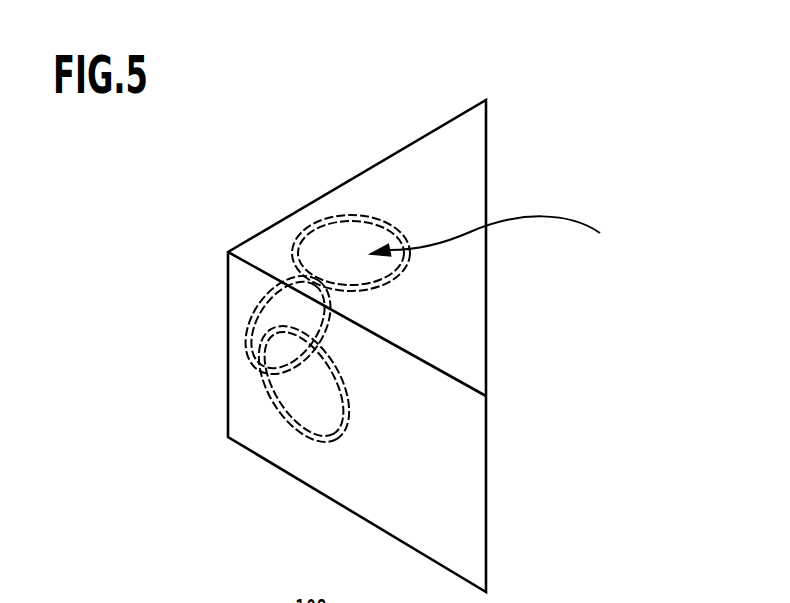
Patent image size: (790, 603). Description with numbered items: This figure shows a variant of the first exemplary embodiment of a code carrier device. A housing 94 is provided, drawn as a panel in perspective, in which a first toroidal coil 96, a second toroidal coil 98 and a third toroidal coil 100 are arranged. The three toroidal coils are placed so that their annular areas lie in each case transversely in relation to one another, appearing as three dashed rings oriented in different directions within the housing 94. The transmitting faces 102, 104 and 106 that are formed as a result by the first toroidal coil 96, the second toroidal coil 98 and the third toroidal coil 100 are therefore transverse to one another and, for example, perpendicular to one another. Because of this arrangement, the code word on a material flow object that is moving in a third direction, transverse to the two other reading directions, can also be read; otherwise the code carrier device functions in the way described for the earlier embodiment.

The housing 94 is at (419, 165).
The first toroidal coil 96 is at (360, 217).
The second toroidal coil 98 is at (327, 445).
The third toroidal coil 100 is at (292, 275).
The transmitting face 102 is at (498, 247).
The transmitting face 104 is at (310, 418).
The transmitting face 106 is at (285, 307).